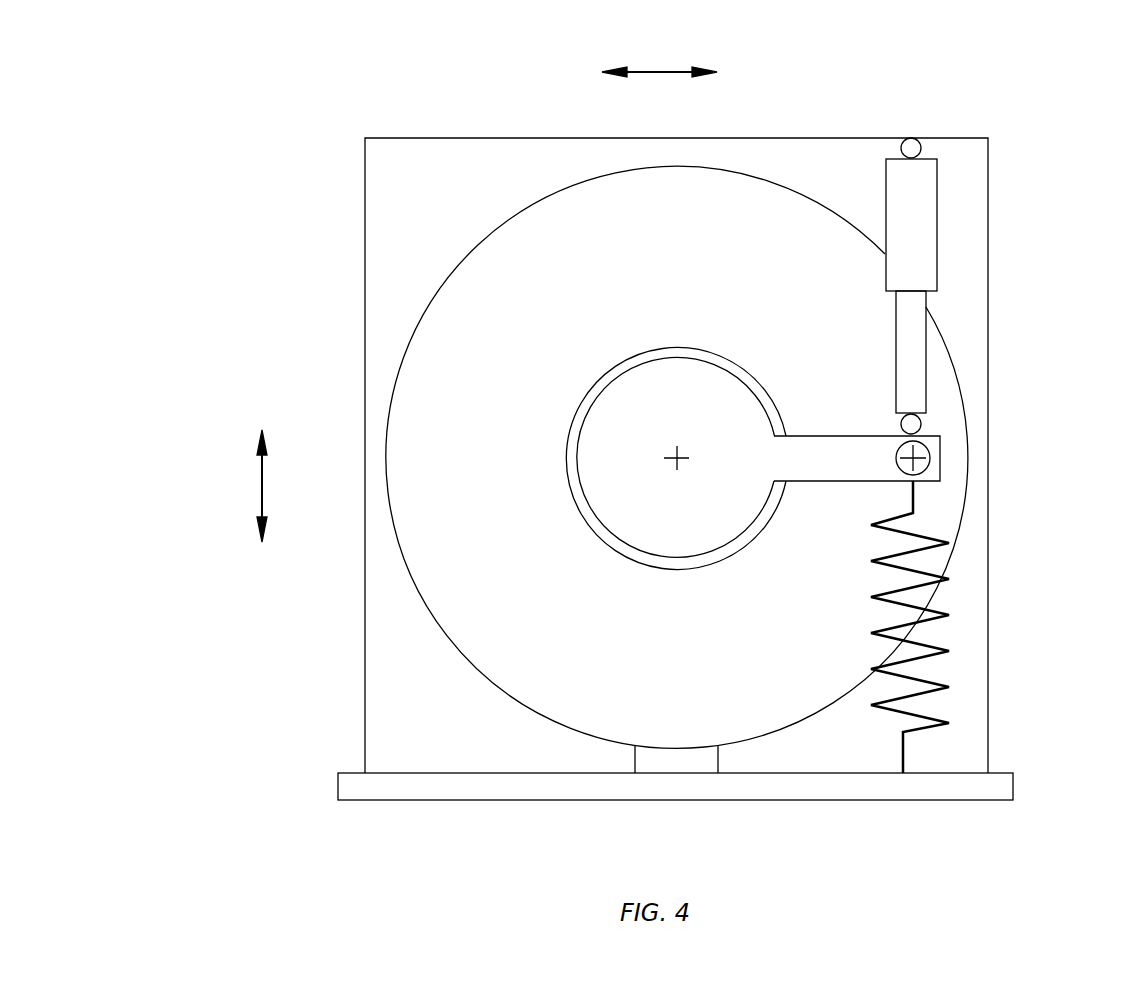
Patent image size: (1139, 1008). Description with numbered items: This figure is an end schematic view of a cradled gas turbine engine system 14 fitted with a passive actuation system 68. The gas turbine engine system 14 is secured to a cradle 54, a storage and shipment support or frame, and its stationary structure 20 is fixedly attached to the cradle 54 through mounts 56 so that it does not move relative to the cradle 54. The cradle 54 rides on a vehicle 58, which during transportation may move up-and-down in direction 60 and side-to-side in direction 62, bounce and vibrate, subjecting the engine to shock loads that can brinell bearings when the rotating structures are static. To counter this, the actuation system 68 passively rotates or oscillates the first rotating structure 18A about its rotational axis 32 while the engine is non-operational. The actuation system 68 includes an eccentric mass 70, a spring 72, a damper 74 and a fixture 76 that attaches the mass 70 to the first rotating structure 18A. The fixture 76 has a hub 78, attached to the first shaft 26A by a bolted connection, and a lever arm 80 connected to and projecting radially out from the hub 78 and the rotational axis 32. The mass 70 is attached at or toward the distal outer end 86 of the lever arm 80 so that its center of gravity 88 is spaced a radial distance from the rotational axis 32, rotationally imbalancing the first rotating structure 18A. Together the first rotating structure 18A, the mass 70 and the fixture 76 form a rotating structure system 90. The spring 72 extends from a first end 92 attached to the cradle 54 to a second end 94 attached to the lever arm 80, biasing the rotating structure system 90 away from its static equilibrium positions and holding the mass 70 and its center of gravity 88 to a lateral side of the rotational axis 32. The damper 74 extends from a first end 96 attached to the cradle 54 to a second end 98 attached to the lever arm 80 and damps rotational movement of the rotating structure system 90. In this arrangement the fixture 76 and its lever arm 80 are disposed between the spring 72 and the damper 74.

The gas turbine engine system 14 is at (520, 190).
The stationary structure 20 is at (775, 182).
The first rotating structure 18A is at (722, 355).
The first shaft 26A is at (686, 347).
The rotational axis 32 is at (664, 464).
The cradle 54 is at (421, 137).
The mounts 56 is at (635, 773).
The vehicle 58 is at (1022, 787).
The direction 60 is at (262, 488).
The direction 62 is at (660, 71).
The passive actuation system 68 is at (950, 460).
The eccentric mass 70 is at (896, 458).
The spring 72 is at (952, 613).
The damper 74 is at (945, 242).
The fixture 76 is at (745, 370).
The hub 78 is at (632, 368).
The lever arm 80 is at (830, 435).
The distal outer end 86 is at (940, 443).
The center of gravity 88 is at (928, 480).
The rotating structure system 90 is at (942, 422).
The first end 92 is at (900, 774).
The second end 94 is at (907, 483).
The first end 96 is at (910, 138).
The second end 98 is at (898, 432).